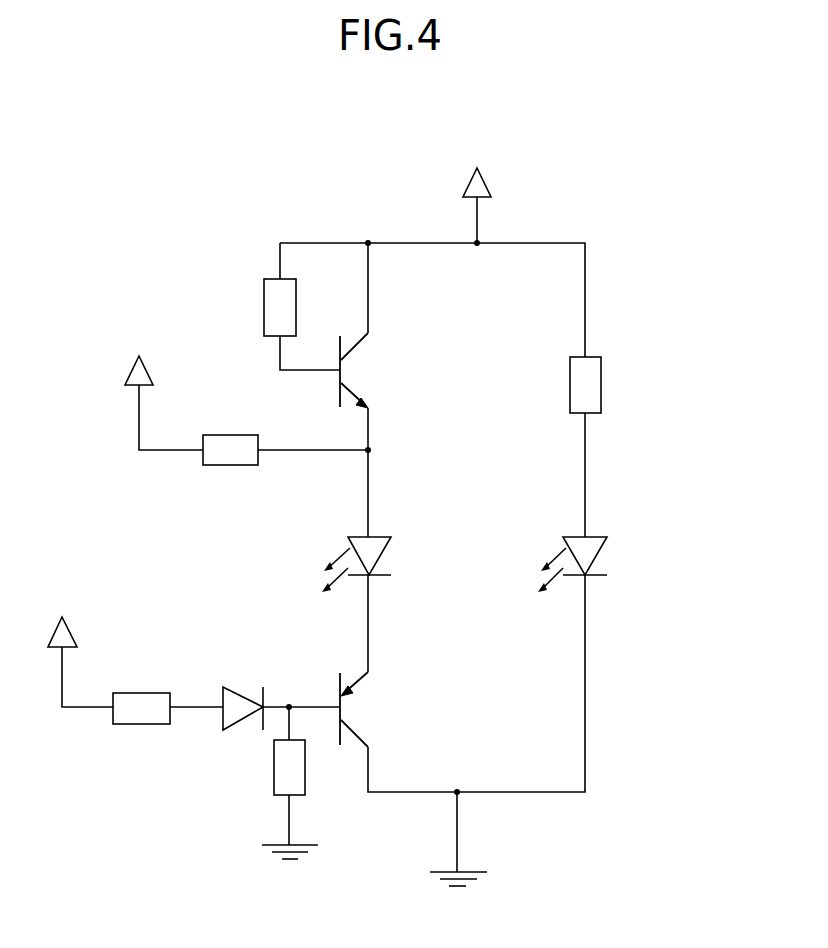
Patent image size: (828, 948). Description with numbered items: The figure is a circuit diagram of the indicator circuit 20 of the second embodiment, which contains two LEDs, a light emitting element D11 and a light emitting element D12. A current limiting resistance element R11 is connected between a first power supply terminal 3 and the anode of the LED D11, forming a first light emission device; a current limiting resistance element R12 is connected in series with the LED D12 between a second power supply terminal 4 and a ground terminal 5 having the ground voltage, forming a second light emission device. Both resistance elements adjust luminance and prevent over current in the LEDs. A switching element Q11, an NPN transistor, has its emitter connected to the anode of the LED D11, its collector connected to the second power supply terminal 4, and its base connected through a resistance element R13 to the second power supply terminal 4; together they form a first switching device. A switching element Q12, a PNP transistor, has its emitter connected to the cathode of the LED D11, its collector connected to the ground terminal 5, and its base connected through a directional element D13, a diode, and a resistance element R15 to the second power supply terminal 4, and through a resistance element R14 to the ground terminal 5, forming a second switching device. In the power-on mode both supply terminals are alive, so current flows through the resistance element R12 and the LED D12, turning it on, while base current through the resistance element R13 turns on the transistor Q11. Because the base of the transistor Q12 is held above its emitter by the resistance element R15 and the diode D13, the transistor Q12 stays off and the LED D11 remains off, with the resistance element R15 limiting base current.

The indicator circuit 20 is at (161, 148).
The first power supply terminal 3 is at (153, 356).
The second power supply terminal 4 is at (285, 389).
The ground terminal 5 is at (400, 850).
The current limiting resistance element R11 is at (230, 434).
The current limiting resistance element R12 is at (614, 385).
The resistance element R13 is at (252, 307).
The resistance element R14 is at (260, 767).
The resistance element R15 is at (141, 691).
The switching element Q11 is at (383, 370).
The switching element Q12 is at (383, 709).
The light emitting element D11 is at (329, 564).
The light emitting element D12 is at (598, 564).
The directional element D13 is at (238, 688).